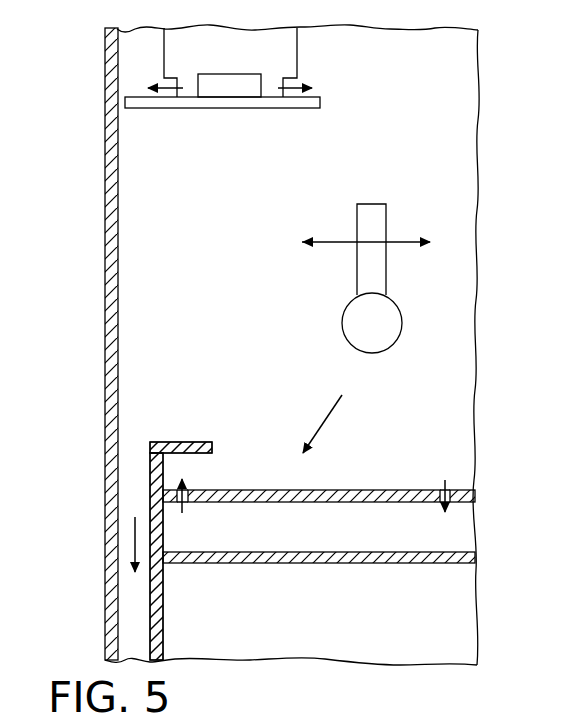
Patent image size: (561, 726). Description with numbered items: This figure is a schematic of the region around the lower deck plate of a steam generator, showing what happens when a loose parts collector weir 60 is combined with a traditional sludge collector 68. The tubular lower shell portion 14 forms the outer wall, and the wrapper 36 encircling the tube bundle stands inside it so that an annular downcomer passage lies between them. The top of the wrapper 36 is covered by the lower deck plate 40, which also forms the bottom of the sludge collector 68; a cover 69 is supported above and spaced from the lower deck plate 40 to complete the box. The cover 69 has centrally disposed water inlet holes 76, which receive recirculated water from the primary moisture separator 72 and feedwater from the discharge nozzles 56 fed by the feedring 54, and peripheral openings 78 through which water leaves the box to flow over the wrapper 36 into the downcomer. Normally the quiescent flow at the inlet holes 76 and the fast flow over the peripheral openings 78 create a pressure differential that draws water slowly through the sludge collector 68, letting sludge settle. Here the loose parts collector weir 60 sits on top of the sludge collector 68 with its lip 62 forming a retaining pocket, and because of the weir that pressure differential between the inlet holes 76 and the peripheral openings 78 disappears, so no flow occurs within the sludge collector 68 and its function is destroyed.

The lower shell portion 14 is at (105, 348).
The primary moisture separator 72 is at (297, 62).
The discharge nozzles 56 is at (357, 279).
The feedring 54 is at (400, 330).
The loose parts collector weir 60 is at (150, 442).
The flange 62 is at (212, 440).
The wrapper 36 is at (163, 620).
The cover 69 is at (305, 490).
The lower deck plate 40 is at (307, 563).
The peripheral openings 78 is at (190, 482).
The water inlet holes 76 is at (445, 480).
The sludge collector 68 is at (338, 420).